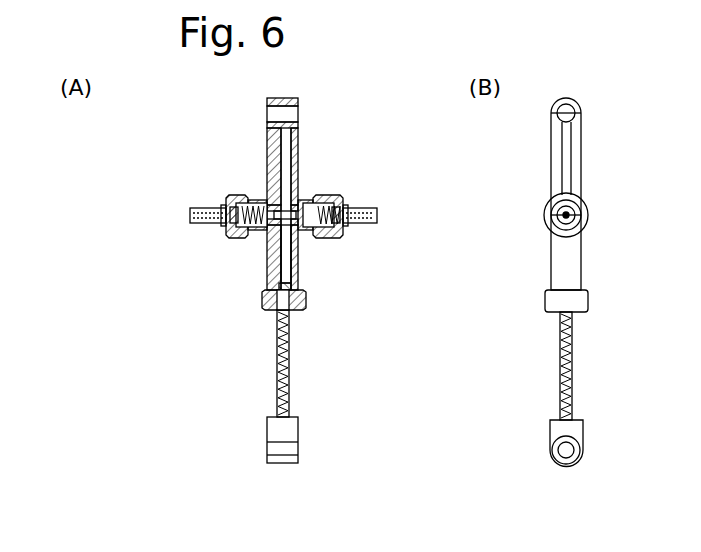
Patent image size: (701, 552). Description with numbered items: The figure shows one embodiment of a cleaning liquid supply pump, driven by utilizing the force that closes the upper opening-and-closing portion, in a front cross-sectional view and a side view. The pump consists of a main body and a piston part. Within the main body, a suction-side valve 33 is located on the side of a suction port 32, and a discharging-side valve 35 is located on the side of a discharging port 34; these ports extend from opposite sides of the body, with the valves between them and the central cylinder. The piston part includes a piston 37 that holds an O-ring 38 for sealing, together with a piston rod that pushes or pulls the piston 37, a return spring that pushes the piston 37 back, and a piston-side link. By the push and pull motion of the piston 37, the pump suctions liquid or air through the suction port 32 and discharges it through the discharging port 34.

The suction port 32 is at (195, 212).
The suction-side valve 33 is at (246, 198).
The discharging port 34 is at (375, 210).
The discharging-side valve 35 is at (320, 198).
The piston 37 is at (276, 309).
The O-ring 38 is at (300, 312).